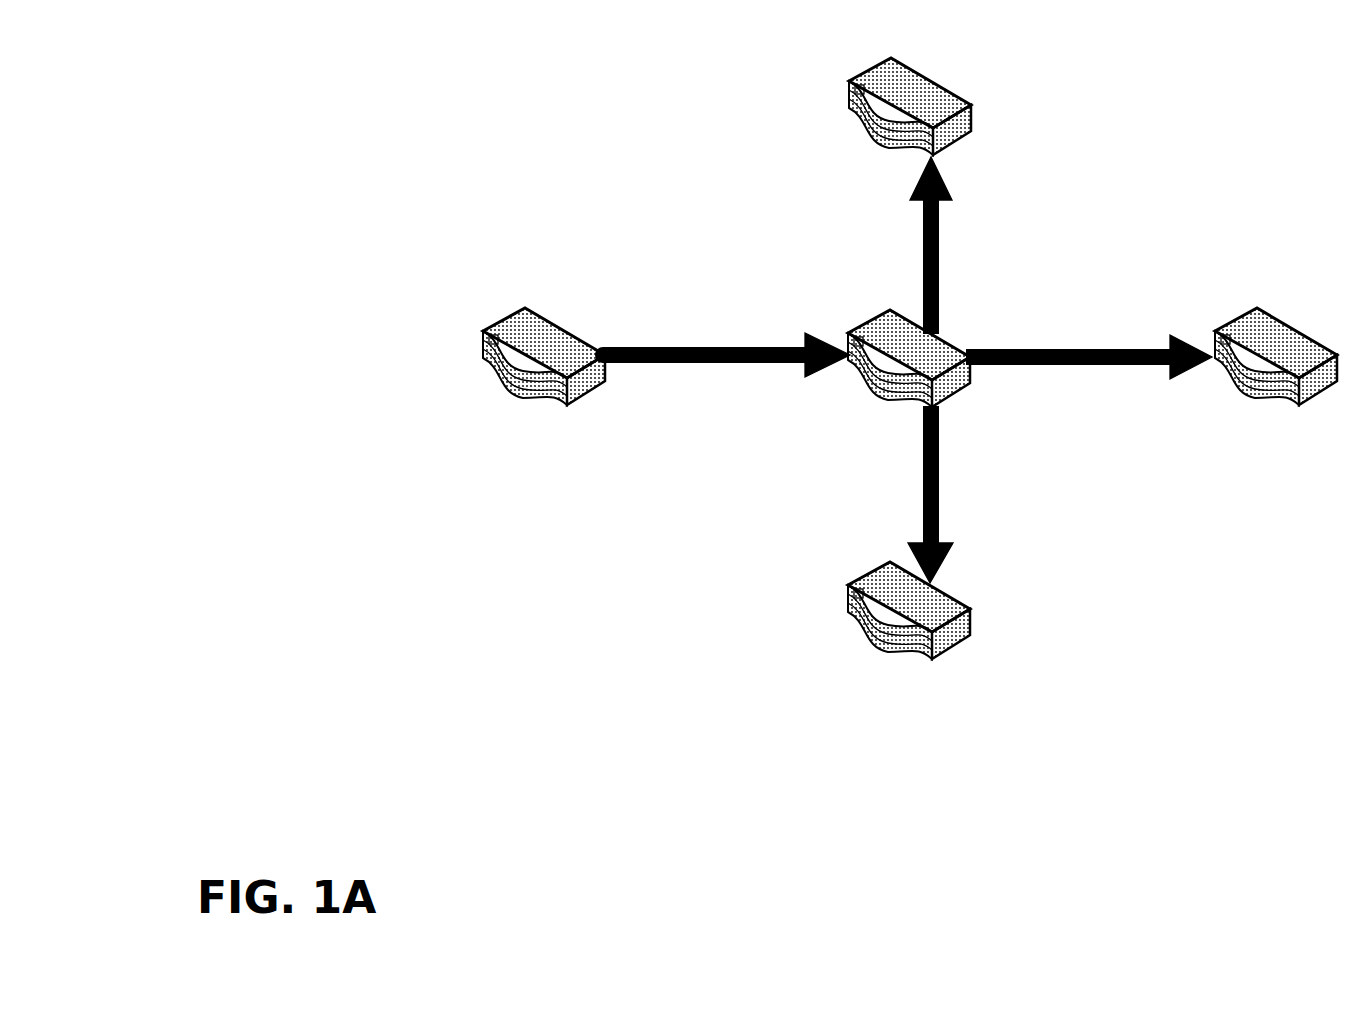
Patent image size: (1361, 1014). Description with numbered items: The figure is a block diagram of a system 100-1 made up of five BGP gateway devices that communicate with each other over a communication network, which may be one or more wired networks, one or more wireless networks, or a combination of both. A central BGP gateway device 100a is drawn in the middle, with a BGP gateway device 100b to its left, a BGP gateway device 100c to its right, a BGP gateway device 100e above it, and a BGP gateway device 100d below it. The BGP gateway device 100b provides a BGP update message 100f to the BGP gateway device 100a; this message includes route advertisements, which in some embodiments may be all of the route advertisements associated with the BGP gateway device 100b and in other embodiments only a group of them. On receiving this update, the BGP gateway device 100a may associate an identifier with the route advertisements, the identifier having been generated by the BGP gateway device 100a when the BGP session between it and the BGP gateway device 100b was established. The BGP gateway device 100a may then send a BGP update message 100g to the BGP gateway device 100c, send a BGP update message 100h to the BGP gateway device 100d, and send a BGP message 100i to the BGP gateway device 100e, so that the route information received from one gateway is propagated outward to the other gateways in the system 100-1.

The system 100-1 is at (318, 851).
The BGP gateway device 100a is at (889, 309).
The BGP gateway device 100b is at (524, 307).
The BGP gateway device 100c is at (1255, 307).
The BGP gateway device 100d is at (888, 561).
The BGP gateway device 100e is at (890, 57).
The BGP update message 100f is at (726, 347).
The BGP update message 100g is at (1089, 349).
The BGP update message 100h is at (954, 494).
The BGP message 100i is at (953, 245).